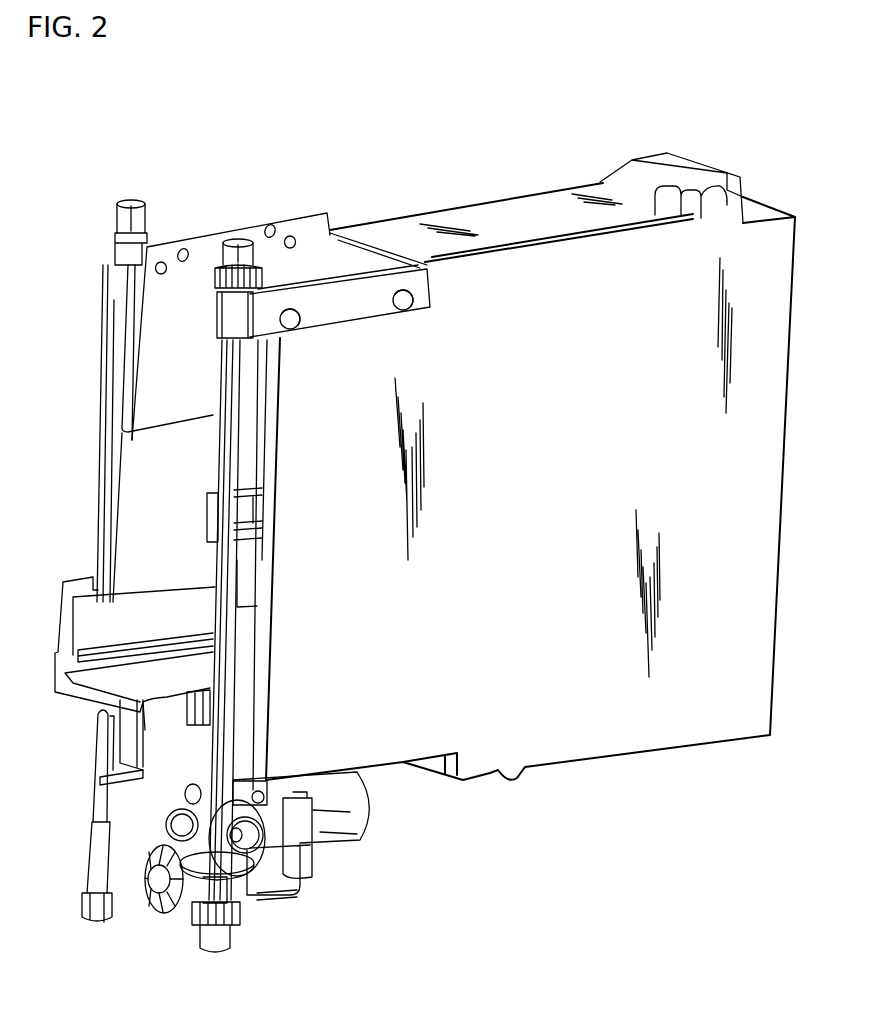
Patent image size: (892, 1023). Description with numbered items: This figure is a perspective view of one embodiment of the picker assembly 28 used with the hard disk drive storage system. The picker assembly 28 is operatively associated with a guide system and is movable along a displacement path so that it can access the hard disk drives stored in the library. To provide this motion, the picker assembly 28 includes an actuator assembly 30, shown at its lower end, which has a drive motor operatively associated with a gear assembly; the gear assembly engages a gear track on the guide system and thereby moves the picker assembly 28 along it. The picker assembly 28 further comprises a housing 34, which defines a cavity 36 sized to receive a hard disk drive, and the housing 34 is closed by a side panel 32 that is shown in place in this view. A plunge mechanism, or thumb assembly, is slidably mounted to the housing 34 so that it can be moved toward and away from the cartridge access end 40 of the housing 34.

The picker assembly 28 is at (230, 144).
The actuator assembly 30 is at (370, 826).
The side panel 32 is at (591, 409).
The housing 34 is at (696, 163).
The cavity 36 is at (163, 402).
The cartridge access end 40 is at (92, 506).